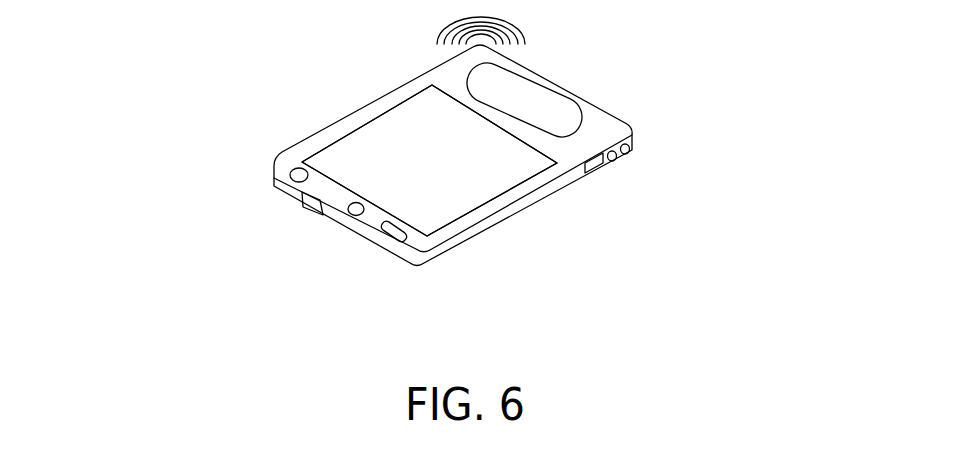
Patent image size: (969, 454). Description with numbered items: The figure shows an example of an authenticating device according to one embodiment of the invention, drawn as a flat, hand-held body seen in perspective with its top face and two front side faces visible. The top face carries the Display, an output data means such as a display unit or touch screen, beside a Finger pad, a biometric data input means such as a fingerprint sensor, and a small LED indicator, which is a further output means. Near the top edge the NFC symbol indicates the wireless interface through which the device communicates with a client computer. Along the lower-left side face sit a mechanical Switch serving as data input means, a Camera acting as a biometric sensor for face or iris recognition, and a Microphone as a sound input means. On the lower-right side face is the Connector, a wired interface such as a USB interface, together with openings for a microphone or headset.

The element NFC is at (436, 37).
The finger pad Finger pad is at (531, 96).
The display Display is at (361, 164).
The element LED indicator is at (282, 174).
The switch Switch is at (299, 206).
The camera Camera is at (356, 217).
The microphone Microphone is at (412, 244).
The connector Connector is at (592, 183).